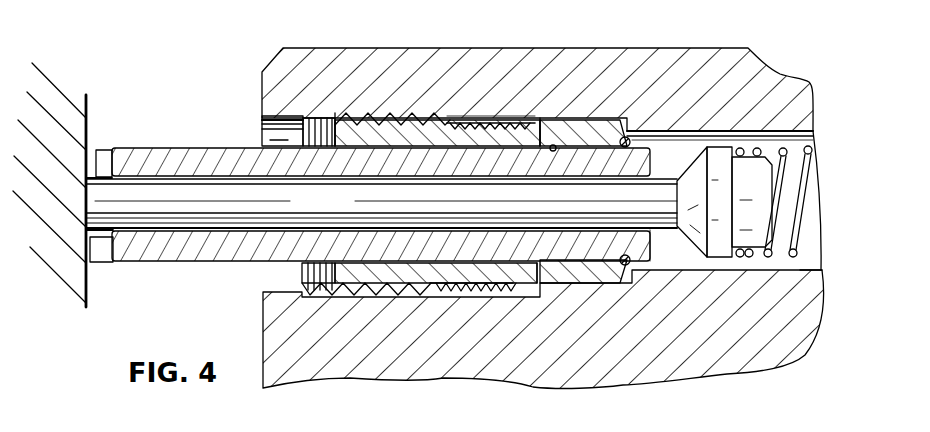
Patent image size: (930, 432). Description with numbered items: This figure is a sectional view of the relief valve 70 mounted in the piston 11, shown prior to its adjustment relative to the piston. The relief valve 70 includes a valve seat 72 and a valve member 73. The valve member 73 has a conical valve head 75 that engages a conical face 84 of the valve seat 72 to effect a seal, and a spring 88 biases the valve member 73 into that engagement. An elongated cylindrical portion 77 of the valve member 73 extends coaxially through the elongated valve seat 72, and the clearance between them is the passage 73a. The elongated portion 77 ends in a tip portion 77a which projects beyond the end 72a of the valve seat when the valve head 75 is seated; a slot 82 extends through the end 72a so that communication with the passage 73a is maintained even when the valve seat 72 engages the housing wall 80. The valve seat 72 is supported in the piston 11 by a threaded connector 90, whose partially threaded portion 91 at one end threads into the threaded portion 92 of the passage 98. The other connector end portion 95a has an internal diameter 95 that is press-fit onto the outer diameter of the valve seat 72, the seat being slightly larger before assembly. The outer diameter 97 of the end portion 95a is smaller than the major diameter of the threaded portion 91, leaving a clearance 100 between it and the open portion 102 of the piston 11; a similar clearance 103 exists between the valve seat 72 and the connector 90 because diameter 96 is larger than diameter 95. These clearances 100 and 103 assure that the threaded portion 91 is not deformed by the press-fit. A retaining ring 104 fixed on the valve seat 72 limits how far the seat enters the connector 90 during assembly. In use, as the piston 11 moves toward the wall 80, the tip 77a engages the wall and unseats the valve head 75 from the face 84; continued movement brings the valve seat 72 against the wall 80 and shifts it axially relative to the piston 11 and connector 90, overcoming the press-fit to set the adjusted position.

The piston 11 is at (781, 96).
The relief valve 70 is at (858, 121).
The valve seat 72 is at (187, 136).
The end of the valve seat 72a is at (110, 150).
The valve member 73 is at (197, 243).
The passage 73a is at (241, 186).
The valve head 75 is at (697, 187).
The elongated cylindrical portion 77 is at (381, 213).
The tip portion 77a is at (98, 240).
The housing wall 80 is at (88, 296).
The slot 82 is at (98, 176).
The conical face 84 is at (652, 231).
The spring 88 is at (820, 157).
The threaded connector 90 is at (411, 133).
The partially threaded portion 91 is at (372, 116).
The threaded portion of the passage 92 is at (453, 122).
The internal diameter 95 is at (555, 146).
The connector end portion 95a is at (585, 125).
The diameter 96 is at (358, 148).
The outer diameter 97 is at (578, 134).
The passage 98 is at (803, 270).
The clearance 100 is at (517, 125).
The open portion 102 is at (537, 281).
The clearance 103 is at (302, 292).
The retaining ring 104 is at (625, 266).